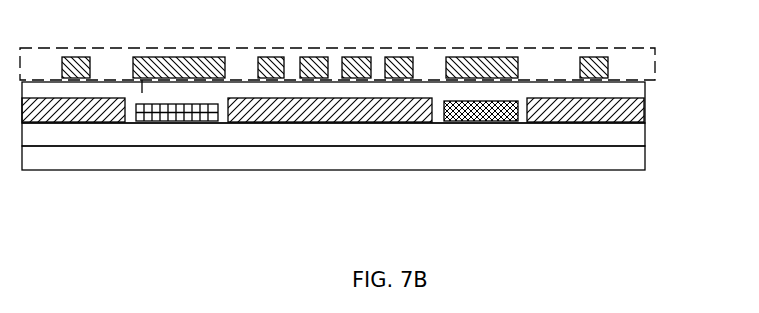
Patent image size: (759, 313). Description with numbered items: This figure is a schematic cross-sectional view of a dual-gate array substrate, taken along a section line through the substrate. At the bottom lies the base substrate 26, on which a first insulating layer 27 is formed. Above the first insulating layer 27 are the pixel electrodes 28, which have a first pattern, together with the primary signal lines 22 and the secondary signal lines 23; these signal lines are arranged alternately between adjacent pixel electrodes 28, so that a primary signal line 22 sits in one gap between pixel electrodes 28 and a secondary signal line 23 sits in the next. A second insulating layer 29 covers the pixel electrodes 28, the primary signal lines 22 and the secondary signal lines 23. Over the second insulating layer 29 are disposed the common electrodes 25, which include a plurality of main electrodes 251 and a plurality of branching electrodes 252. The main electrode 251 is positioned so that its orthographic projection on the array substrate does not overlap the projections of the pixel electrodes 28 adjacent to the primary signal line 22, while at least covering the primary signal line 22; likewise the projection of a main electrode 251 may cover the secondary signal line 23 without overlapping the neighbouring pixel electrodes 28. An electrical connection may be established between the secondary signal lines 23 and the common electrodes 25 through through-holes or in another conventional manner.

The primary signal line 22 is at (165, 113).
The secondary signal line 23 is at (487, 121).
The common electrode 25 is at (573, 48).
The main electrode 251 is at (228, 64).
The second light blocking portion 252 is at (72, 62).
The base substrate 26 is at (592, 158).
The first insulating layer 27 is at (620, 133).
The pixel electrode 28 is at (645, 97).
The second insulating layer 29 is at (142, 93).